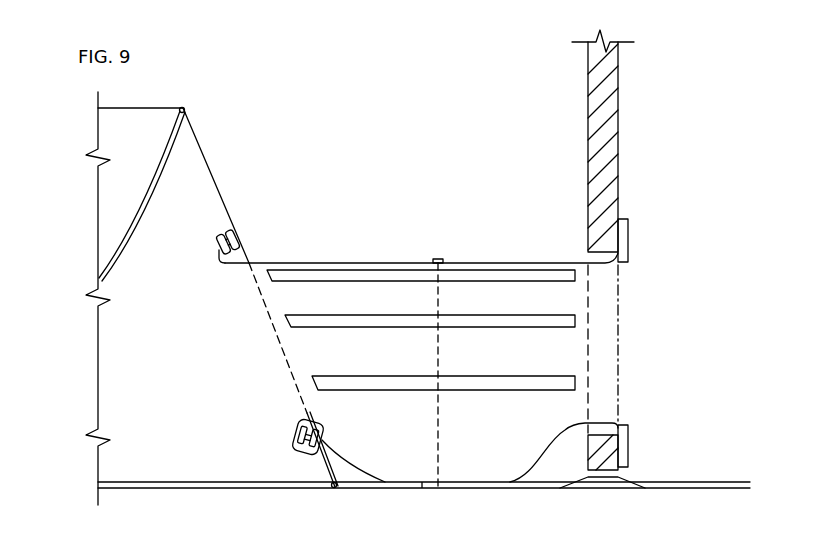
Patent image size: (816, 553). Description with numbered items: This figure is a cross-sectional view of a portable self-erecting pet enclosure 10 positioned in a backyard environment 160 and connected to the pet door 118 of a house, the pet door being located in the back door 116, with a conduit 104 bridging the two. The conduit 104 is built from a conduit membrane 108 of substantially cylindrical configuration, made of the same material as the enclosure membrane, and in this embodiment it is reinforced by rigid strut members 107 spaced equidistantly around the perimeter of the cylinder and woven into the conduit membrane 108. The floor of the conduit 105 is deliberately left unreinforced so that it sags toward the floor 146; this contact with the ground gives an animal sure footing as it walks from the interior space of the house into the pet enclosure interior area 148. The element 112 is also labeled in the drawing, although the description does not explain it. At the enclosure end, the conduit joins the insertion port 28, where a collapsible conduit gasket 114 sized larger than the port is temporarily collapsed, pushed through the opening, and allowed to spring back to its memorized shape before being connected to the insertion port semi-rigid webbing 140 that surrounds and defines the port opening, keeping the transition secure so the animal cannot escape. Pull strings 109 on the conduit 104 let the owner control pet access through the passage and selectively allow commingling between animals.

The portable self-erecting pet enclosure 10 is at (199, 107).
The insertion port 28 is at (283, 352).
The conduit 104 is at (477, 255).
The floor of the conduit 105 is at (422, 488).
The rigid strut members 107 is at (528, 322).
The conduit membrane 108 is at (342, 262).
The pull strings 109 is at (437, 259).
The fender hump 112 is at (497, 452).
The conduit gasket 114 is at (298, 456).
The back door 116 is at (612, 128).
The pet door 118 is at (622, 322).
The insertion port semi-rigid webbing 140 is at (323, 438).
The floor 146 is at (688, 488).
The pet enclosure interior area 148 is at (133, 348).
The backyard environment 160 is at (352, 108).